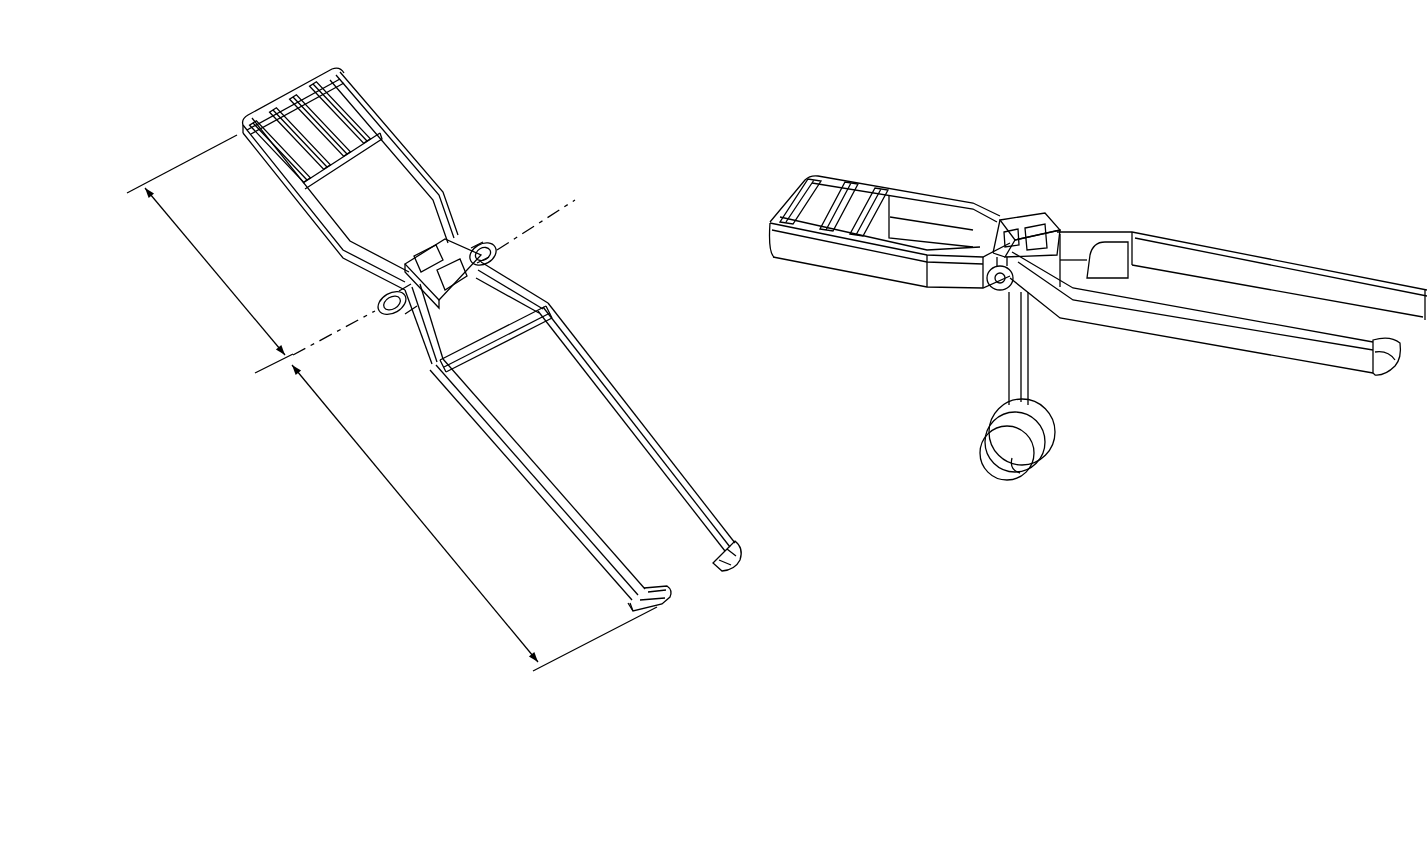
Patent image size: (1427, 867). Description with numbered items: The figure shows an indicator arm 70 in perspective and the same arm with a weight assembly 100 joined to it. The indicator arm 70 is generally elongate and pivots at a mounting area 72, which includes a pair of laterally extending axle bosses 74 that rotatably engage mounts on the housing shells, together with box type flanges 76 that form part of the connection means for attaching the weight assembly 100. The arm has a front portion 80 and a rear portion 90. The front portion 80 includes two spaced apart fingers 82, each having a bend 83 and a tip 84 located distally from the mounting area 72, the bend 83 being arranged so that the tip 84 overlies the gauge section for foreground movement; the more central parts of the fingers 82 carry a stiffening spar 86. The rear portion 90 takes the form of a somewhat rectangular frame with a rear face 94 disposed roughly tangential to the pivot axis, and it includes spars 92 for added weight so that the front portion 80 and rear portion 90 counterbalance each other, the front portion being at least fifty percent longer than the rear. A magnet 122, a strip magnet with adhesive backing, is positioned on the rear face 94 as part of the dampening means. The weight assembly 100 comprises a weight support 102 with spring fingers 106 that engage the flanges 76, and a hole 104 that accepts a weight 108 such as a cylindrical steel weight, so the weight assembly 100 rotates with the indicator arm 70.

In FIG. 6, the indicator arm 70 is at (576, 120).
In FIG. 7, the indicator arm 70 is at (929, 152).
In FIG. 6, the mounting area 72 is at (380, 305).
In FIG. 6, the axle bosses 74 is at (498, 259).
In FIG. 6, the box type flanges 76 is at (483, 248).
In FIG. 6, the front portion 80 is at (735, 467).
In FIG. 6, the fingers 82 is at (620, 407).
In FIG. 6, the bend 83 is at (738, 547).
In FIG. 6, the tip 84 is at (660, 590).
In FIG. 6, the stiffening spar 86 is at (500, 348).
In FIG. 6, the rear portion 90 is at (423, 126).
In FIG. 6, the spars 92 is at (367, 106).
In FIG. 6, the rear face 94 is at (265, 100).
In FIG. 7, the weight assembly 100 is at (975, 387).
In FIG. 7, the weight support 102 is at (1020, 364).
In FIG. 7, the hole 104 is at (1052, 456).
In FIG. 7, the spring fingers 106 is at (1036, 228).
In FIG. 7, the weight 108 is at (1018, 466).
In FIG. 7, the magnet 122 is at (785, 203).